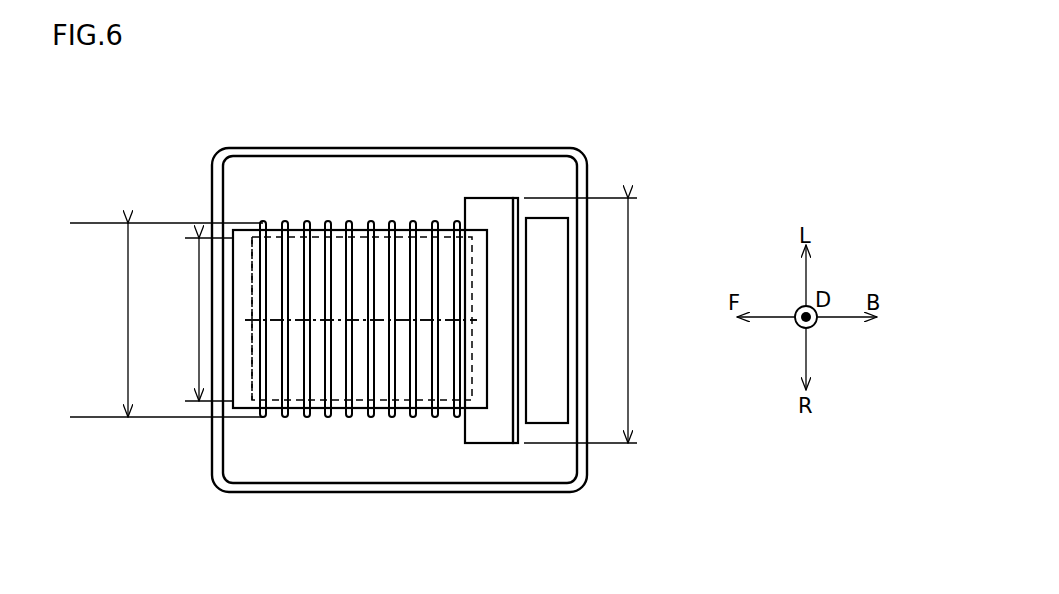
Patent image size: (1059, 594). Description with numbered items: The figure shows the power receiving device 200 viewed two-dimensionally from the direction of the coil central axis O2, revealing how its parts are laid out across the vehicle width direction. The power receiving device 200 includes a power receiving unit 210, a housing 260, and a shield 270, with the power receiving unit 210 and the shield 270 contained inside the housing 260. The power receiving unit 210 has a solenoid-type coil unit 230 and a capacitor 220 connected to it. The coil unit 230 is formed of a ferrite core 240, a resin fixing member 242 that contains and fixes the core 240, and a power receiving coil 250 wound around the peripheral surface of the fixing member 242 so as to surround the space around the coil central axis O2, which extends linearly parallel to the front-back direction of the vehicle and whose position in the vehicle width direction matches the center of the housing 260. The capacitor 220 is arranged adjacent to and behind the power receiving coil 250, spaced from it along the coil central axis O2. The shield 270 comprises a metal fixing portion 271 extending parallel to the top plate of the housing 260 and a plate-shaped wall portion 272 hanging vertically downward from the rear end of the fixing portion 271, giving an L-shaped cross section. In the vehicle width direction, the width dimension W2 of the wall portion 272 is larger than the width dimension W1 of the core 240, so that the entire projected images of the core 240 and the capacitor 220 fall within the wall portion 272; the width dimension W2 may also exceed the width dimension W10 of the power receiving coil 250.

The power receiving device 200 is at (213, 120).
The power receiving unit 210 is at (512, 79).
The capacitor 220 is at (543, 248).
The coil unit 230 is at (387, 112).
The core 240 is at (318, 237).
The fixing member 242 is at (250, 228).
The power receiving coil 250 is at (371, 225).
The housing 260 is at (216, 445).
The shield 270 is at (540, 536).
The fixing portion 271 is at (487, 428).
The wall portion 272 is at (515, 432).
The coil central axis O2 is at (337, 410).
The width dimension of core W1 is at (196, 322).
The width dimension of power receiving coil W10 is at (125, 322).
The width dimension of wall portion W2 is at (630, 322).